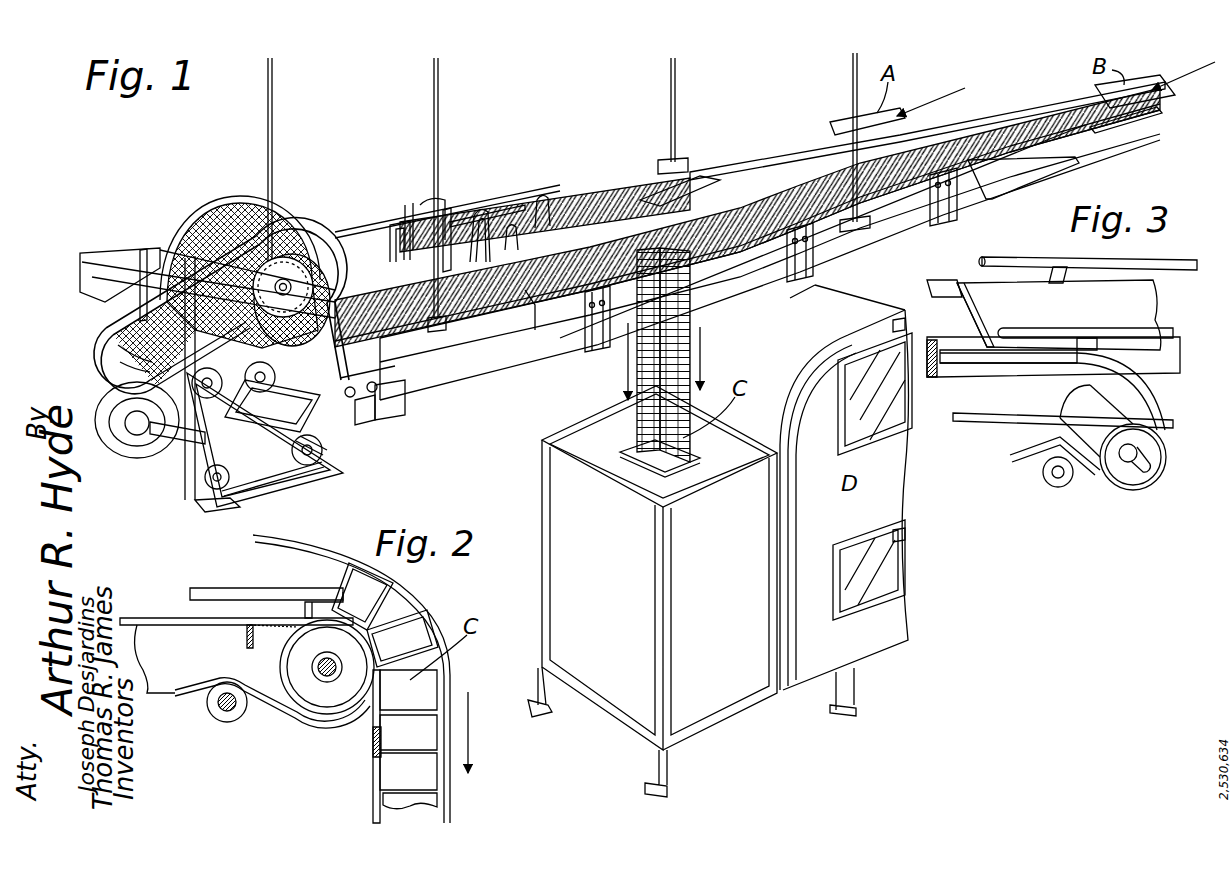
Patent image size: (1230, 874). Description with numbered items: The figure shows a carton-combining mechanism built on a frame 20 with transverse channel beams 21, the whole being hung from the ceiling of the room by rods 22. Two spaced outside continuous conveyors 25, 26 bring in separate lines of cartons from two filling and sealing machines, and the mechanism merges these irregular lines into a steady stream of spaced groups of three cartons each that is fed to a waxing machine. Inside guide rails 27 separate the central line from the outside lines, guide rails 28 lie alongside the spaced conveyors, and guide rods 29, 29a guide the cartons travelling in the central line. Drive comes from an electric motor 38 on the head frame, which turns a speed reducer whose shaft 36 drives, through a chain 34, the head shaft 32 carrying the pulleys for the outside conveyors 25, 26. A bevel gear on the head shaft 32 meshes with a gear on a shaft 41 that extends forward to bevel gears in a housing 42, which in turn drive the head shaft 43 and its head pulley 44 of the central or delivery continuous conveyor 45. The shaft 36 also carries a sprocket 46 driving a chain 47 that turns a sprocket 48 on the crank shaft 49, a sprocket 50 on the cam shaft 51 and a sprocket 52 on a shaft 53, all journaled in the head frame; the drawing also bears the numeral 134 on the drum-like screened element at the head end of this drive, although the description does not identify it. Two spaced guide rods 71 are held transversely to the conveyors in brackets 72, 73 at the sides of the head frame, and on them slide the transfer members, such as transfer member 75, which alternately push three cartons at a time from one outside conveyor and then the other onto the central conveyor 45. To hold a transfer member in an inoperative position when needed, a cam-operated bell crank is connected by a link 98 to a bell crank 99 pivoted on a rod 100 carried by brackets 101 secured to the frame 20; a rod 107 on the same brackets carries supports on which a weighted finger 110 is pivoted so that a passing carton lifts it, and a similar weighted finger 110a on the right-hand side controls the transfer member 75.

In FIG. 1, the frame 20 is at (527, 340).
In FIG. 1, the transverse channel beams 21 is at (867, 230).
In FIG. 1, the rods 22 is at (273, 148).
In FIG. 1, the continuous conveyor 25 is at (713, 168).
In FIG. 3, the continuous conveyor 25 is at (1147, 316).
In FIG. 1, the continuous conveyor 26 is at (987, 183).
In FIG. 2, the inside guide rails 27 is at (257, 573).
In FIG. 3, the inside guide rails 27 is at (1165, 333).
In FIG. 3, the guide rails 28 is at (1113, 246).
In FIG. 2, the guide rod 29 is at (452, 676).
In FIG. 2, the guide rod 29a is at (371, 786).
In FIG. 1, the head shaft 32 is at (340, 463).
In FIG. 1, the chain 34 is at (273, 483).
In FIG. 1, the shaft 36 is at (150, 433).
In FIG. 1, the electric motor 38 is at (107, 423).
In FIG. 1, the shaft 41 is at (477, 214).
In FIG. 1, the housing 42 is at (540, 198).
In FIG. 2, the head shaft 43 is at (327, 682).
In FIG. 3, the head shaft 43 is at (1130, 487).
In FIG. 2, the head pulley 44 is at (280, 668).
In FIG. 3, the head pulley 44 is at (1133, 407).
In FIG. 2, the central delivery continuous conveyor 45 is at (158, 618).
In FIG. 3, the central delivery continuous conveyor 45 is at (992, 365).
In FIG. 1, the sprocket 46 is at (193, 473).
In FIG. 1, the chain 47 is at (193, 453).
In FIG. 1, the sprocket 48 is at (150, 380).
In FIG. 1, the crank shaft 49 is at (123, 363).
In FIG. 1, the sprocket 50 is at (268, 247).
In FIG. 1, the cam shaft 51 is at (313, 267).
In FIG. 1, the sprocket 52 is at (223, 500).
In FIG. 1, the shaft 53 is at (257, 407).
In FIG. 1, the guide rods 71 is at (142, 252).
In FIG. 1, the bracket 72 is at (93, 254).
In FIG. 1, the bracket 73 is at (397, 378).
In FIG. 1, the transfer member 75 is at (367, 418).
In FIG. 1, the link 98 is at (343, 228).
In FIG. 1, the bell crank 99 is at (447, 214).
In FIG. 1, the rod 100 is at (453, 221).
In FIG. 1, the brackets 101 is at (407, 224).
In FIG. 1, the rod 107 is at (422, 208).
In FIG. 1, the weighted finger 110 is at (393, 258).
In FIG. 1, the weighted finger 110a is at (433, 370).
In FIG. 1, the screen drum 134 is at (195, 213).